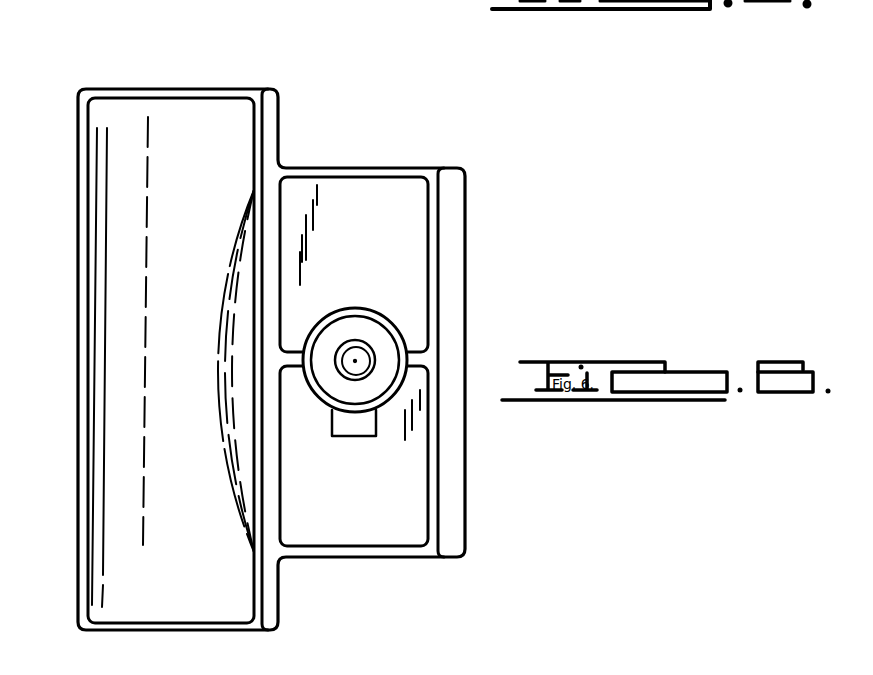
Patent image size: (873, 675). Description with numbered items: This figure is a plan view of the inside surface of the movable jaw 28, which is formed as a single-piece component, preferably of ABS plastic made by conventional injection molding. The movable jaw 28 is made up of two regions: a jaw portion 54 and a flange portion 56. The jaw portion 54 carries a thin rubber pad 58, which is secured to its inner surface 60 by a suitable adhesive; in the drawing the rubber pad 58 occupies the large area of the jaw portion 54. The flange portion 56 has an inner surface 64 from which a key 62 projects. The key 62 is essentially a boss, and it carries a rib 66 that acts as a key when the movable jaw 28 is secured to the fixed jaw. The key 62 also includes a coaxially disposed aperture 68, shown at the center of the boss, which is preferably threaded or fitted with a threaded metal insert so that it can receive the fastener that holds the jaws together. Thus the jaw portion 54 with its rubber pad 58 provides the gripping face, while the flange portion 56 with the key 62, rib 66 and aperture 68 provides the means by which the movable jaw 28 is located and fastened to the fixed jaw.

The movable jaw 28 is at (68, 84).
The jaw portion 54 is at (139, 89).
The inner surface 60 is at (228, 91).
The thin rubber pad 58 is at (185, 586).
The flange portion 56 is at (385, 167).
The inner surface 64 is at (362, 530).
The key 62 is at (316, 412).
The aperture 68 is at (352, 350).
The rib 66 is at (366, 438).